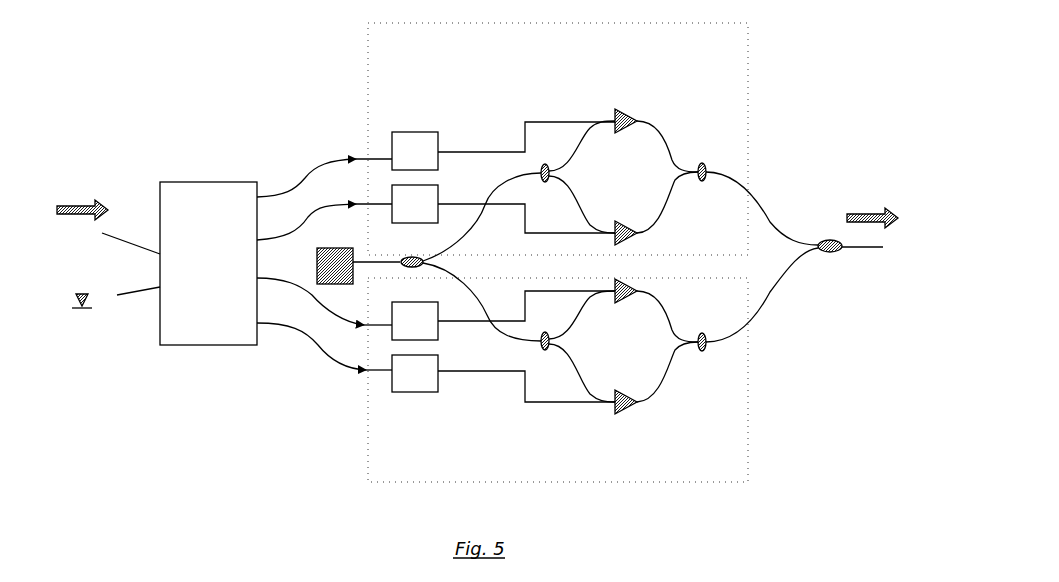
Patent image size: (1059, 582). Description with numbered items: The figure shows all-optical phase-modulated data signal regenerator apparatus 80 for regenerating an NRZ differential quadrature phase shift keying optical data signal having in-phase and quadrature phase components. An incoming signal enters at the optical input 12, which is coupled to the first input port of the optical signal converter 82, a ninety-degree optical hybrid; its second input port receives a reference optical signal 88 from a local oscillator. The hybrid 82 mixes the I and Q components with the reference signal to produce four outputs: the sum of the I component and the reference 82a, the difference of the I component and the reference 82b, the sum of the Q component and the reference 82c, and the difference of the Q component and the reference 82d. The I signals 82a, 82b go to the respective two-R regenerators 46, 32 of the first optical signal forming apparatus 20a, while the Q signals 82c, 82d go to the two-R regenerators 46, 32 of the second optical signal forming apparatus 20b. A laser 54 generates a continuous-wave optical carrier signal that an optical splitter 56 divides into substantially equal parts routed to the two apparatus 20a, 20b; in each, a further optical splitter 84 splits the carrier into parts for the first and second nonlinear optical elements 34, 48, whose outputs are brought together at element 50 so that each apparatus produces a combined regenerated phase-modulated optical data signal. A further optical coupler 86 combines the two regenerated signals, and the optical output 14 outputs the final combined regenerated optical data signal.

The all-optical phase-modulated data signal regenerator apparatus 80 is at (306, 62).
The first optical signal forming apparatus 20a is at (732, 66).
The second optical signal forming apparatus 20b is at (737, 413).
The optical input 12 is at (117, 235).
The reference optical signal 88 is at (127, 297).
The optical signal converter 82 is at (203, 337).
The sum of the I component and the reference optical signal 82a is at (269, 194).
The difference of the I component and the reference optical signal 82b is at (270, 240).
The sum of the Q component and the reference optical signal 82c is at (261, 277).
The difference of the Q component and the reference optical signal 82d is at (275, 327).
The laser 54 is at (331, 284).
The optical splitter 56 is at (401, 270).
The 2R regenerator 32 is at (407, 223).
The 2R regenerator 46 is at (420, 138).
The further optical splitter 84 is at (545, 184).
The second nonlinear optical element 48 is at (627, 117).
The first nonlinear optical element 34 is at (639, 240).
The output combiner 50 is at (702, 185).
The further optical coupler 86 is at (828, 255).
The optical output 14 is at (862, 252).